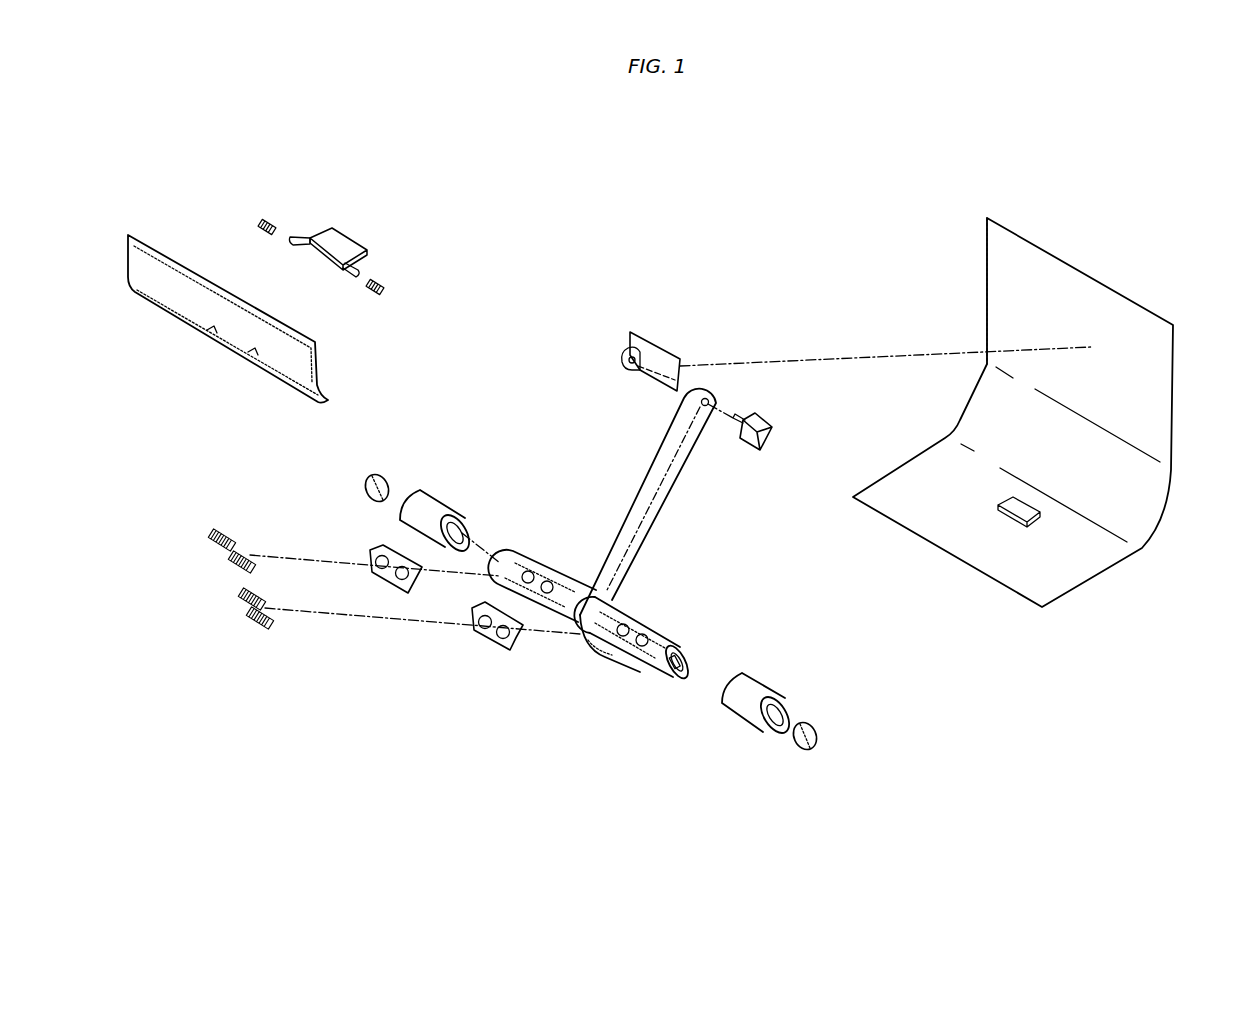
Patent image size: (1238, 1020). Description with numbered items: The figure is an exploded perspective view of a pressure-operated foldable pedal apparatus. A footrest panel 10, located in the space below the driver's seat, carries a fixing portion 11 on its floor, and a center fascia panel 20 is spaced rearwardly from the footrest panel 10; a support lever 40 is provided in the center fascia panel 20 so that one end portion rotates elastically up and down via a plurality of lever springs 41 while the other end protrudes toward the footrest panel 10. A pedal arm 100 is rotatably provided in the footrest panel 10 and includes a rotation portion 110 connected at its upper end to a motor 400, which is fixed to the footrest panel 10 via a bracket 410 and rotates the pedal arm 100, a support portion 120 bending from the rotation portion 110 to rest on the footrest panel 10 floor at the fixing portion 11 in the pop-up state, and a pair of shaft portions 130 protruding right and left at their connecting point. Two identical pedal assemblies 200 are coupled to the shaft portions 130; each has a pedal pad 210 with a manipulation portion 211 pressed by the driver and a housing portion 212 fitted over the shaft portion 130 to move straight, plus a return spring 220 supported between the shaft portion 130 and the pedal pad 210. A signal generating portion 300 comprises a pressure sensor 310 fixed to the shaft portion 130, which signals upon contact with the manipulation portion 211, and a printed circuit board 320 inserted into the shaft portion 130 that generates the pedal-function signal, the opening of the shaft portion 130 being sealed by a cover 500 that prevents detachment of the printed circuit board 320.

The footrest panel 10 is at (1087, 298).
The fixing portion 11 is at (1022, 518).
The center fascia panel 20 is at (228, 332).
The support lever 40 is at (338, 230).
The lever spring 41 is at (270, 220).
The pedal arm 100 is at (612, 572).
The rotation portion 110 is at (648, 514).
The support portion 120 is at (610, 662).
The shaft portion 130 is at (530, 557).
The pedal assembly 200 is at (617, 597).
The pedal pad 210 is at (628, 607).
The manipulation portion 211 is at (428, 508).
The housing portion 212 is at (468, 530).
The return spring 220 is at (225, 557).
The signal generating portion 300 is at (395, 600).
The pressure sensor 310 is at (372, 552).
The printed circuit board 320 is at (573, 577).
The motor 400 is at (772, 437).
The bracket 410 is at (660, 367).
The cover 500 is at (377, 475).